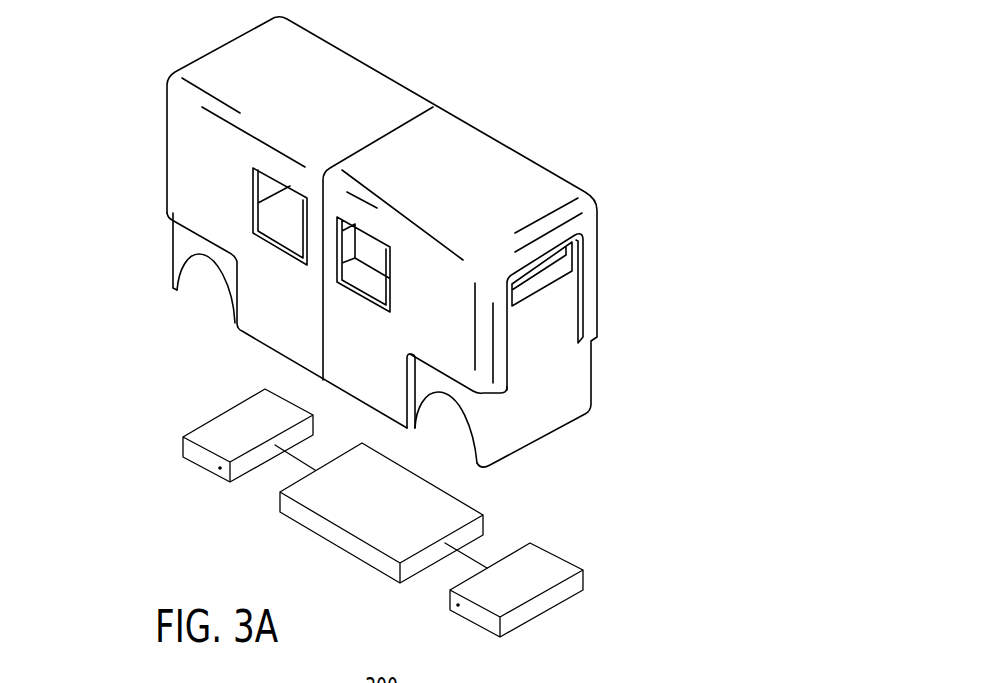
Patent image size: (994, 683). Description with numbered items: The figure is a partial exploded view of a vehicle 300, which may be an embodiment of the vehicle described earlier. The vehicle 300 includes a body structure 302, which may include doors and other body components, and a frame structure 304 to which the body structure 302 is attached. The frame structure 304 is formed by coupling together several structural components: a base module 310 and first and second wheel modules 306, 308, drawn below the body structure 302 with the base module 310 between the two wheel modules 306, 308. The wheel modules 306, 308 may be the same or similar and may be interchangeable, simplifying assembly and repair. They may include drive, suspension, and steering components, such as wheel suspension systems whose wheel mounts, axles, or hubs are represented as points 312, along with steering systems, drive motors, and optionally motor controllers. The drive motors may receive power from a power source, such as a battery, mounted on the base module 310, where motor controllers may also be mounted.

The vehicle 300 is at (542, 72).
The body structure 302 is at (597, 303).
The frame structure 304 is at (146, 404).
The first wheel module 306 is at (209, 418).
The second wheel module 308 is at (567, 558).
The base module 310 is at (343, 548).
The points 312 is at (220, 470).